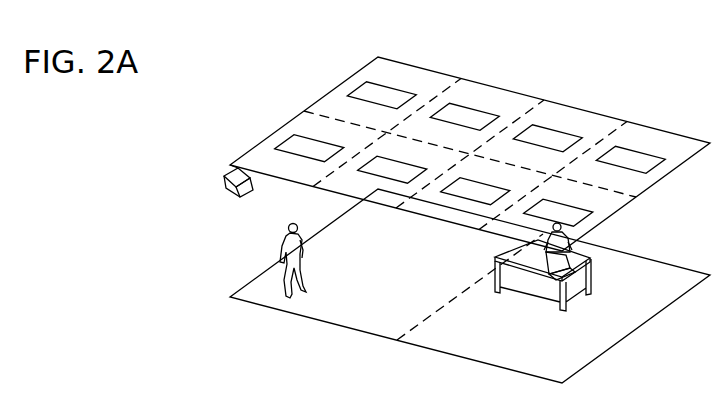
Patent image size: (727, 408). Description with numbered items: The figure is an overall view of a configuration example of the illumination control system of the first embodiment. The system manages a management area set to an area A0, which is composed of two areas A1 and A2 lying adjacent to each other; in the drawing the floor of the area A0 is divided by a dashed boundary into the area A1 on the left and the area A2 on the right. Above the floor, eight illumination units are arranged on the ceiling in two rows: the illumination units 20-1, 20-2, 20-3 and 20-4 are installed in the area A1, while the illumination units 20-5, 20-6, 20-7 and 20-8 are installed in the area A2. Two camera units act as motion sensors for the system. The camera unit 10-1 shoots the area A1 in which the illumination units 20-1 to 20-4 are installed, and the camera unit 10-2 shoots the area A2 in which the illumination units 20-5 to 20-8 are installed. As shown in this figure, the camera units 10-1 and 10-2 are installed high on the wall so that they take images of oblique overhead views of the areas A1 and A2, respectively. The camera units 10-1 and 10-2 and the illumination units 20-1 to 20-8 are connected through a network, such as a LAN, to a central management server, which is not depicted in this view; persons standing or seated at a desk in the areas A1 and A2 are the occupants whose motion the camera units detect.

The illumination unit 20-1 is at (292, 141).
The illumination unit 20-2 is at (361, 89).
The illumination unit 20-3 is at (412, 158).
The illumination unit 20-4 is at (490, 117).
The illumination unit 20-5 is at (453, 196).
The illumination unit 20-6 is at (558, 134).
The illumination unit 20-7 is at (592, 212).
The illumination unit 20-8 is at (647, 157).
The camera unit 10-1 is at (227, 180).
The camera unit 10-2 is at (569, 278).
The area A0 is at (627, 342).
The area A1 is at (457, 287).
The area A2 is at (520, 322).